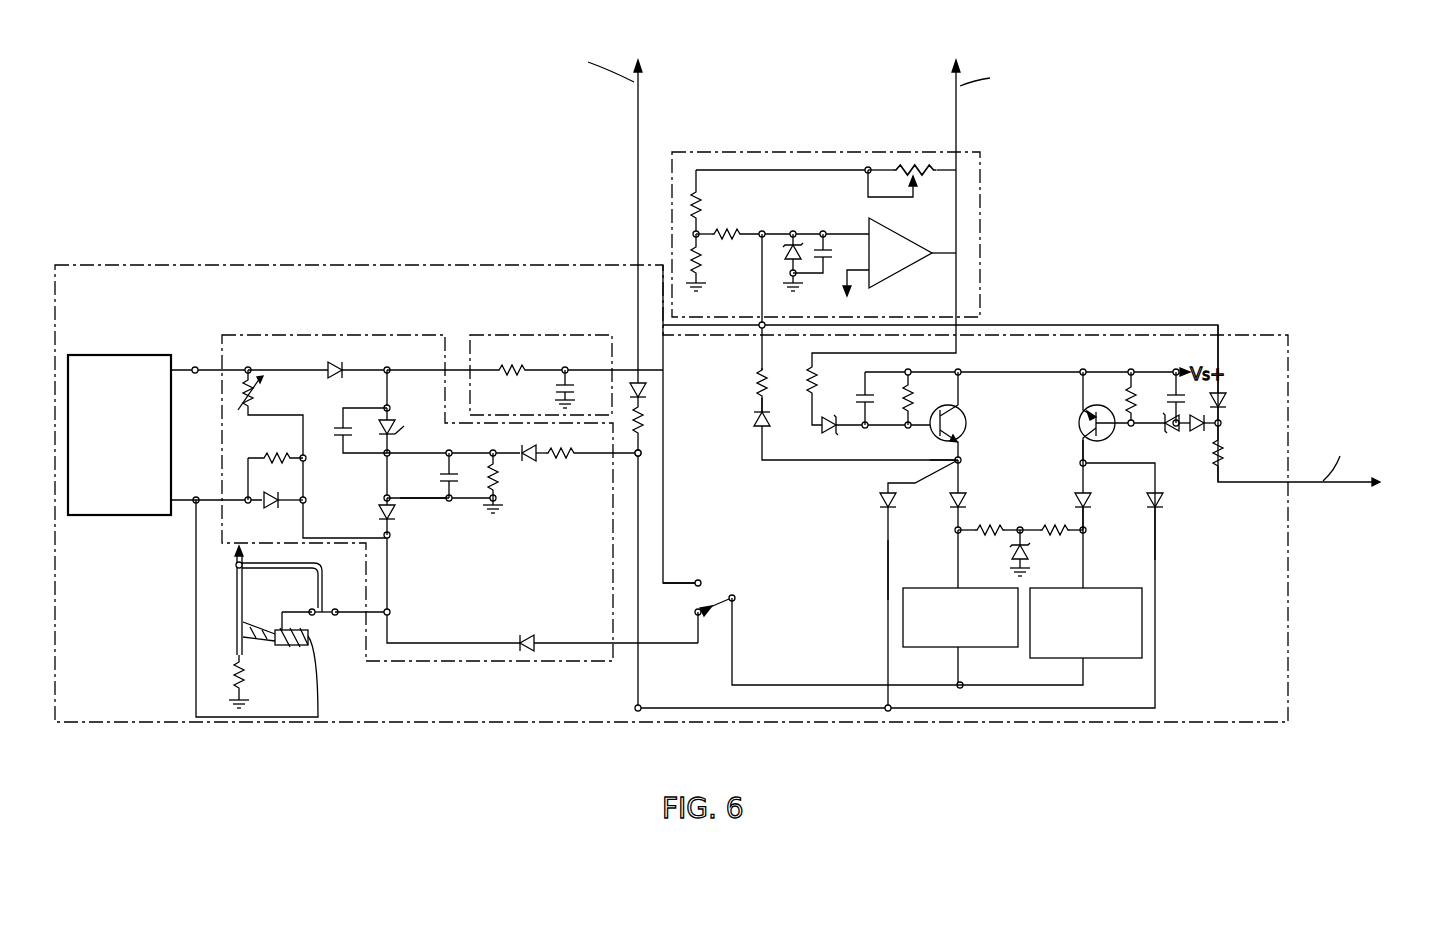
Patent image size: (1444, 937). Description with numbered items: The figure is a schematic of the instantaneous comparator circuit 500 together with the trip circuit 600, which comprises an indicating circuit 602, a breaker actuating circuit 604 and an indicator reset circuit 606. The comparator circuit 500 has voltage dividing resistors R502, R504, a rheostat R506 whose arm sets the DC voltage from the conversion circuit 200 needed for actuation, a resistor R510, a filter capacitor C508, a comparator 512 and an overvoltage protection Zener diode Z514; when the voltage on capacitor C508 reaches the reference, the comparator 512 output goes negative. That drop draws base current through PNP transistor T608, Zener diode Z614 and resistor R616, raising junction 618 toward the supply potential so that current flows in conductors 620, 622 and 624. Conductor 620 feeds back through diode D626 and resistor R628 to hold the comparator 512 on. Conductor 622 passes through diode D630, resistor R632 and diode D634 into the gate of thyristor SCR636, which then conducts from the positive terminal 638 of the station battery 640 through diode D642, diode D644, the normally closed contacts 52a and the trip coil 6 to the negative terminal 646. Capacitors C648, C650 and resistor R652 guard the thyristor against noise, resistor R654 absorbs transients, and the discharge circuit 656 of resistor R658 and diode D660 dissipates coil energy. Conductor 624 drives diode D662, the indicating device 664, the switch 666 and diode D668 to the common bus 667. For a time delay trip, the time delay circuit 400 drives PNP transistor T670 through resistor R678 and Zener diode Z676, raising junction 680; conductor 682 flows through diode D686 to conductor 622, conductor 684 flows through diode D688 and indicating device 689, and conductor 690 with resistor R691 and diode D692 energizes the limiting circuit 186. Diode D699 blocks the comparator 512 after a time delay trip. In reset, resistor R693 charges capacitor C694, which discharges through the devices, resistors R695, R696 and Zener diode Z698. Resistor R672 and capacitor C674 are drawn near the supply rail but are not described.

The trip circuit 600 is at (758, 751).
The indicating circuit 602 is at (1025, 671).
The instantaneous comparator circuit 500 is at (1035, 185).
The breaker actuating circuit 604 is at (285, 336).
The indicator reset circuit 606 is at (517, 334).
The station battery 640 is at (122, 354).
The positive terminal 638 is at (195, 367).
The negative terminal 646 is at (196, 497).
The discharge circuit 656 is at (342, 481).
The resistor R654 is at (267, 393).
The resistor R658 is at (276, 457).
The diode D660 is at (276, 508).
The normally closed contacts 52a is at (311, 611).
The trip coil 6 is at (303, 652).
The diode D642 is at (340, 368).
The capacitor C648 is at (335, 428).
The thyristor SCR636 is at (395, 431).
The diode D644 is at (383, 515).
The capacitor C650 is at (440, 482).
The common bus 667 is at (412, 500).
The resistor R652 is at (497, 495).
The diode D634 is at (535, 451).
The resistor R632 is at (566, 462).
The diode D668 is at (524, 640).
The resistor R693 is at (510, 368).
The capacitor C694 is at (555, 388).
The limiting circuit 186 is at (552, 374).
The diode D692 is at (648, 385).
The resistor R691 is at (648, 426).
The conductor 690 is at (650, 455).
The conversion circuit 200 is at (969, 206).
The voltage dividing resistor R502 is at (702, 210).
The voltage dividing resistor R504 is at (705, 272).
The rheostat R506 is at (923, 188).
The resistor R510 is at (732, 228).
The overvoltage protection Zener diode Z514 is at (785, 248).
The filter capacitor C508 is at (828, 246).
The comparator 512 is at (918, 250).
The resistor R628 is at (758, 390).
The conductor 620 is at (758, 408).
The diode D626 is at (758, 428).
The resistor R616 is at (806, 382).
The Zener diode Z614 is at (836, 433).
The PNP transistor T608 is at (964, 418).
The junction 618 is at (955, 460).
The conductor 624 is at (962, 478).
The diode D630 is at (882, 500).
The conductor 622 is at (886, 560).
The diode D662 is at (970, 510).
The resistor R695 is at (995, 518).
The resistor R696 is at (1056, 528).
The Zener diode Z698 is at (1026, 555).
The electrically resettable indicating device 664 is at (945, 588).
The electrically resettable indicating device 689 is at (1090, 588).
The two position switch 666 is at (696, 610).
The PNP transistor T670 is at (1080, 418).
The junction 680 is at (1080, 462).
The resistor R672 is at (1128, 390).
The capacitor C674 is at (1170, 390).
The Zener diode Z676 is at (1172, 434).
The diode D699 is at (1226, 395).
The resistor R678 is at (1214, 458).
The diode D688 is at (1108, 496).
The conductor 684 is at (1088, 522).
The diode D686 is at (1163, 505).
The conductor 682 is at (1160, 533).
The time delay circuit 400 is at (1353, 428).